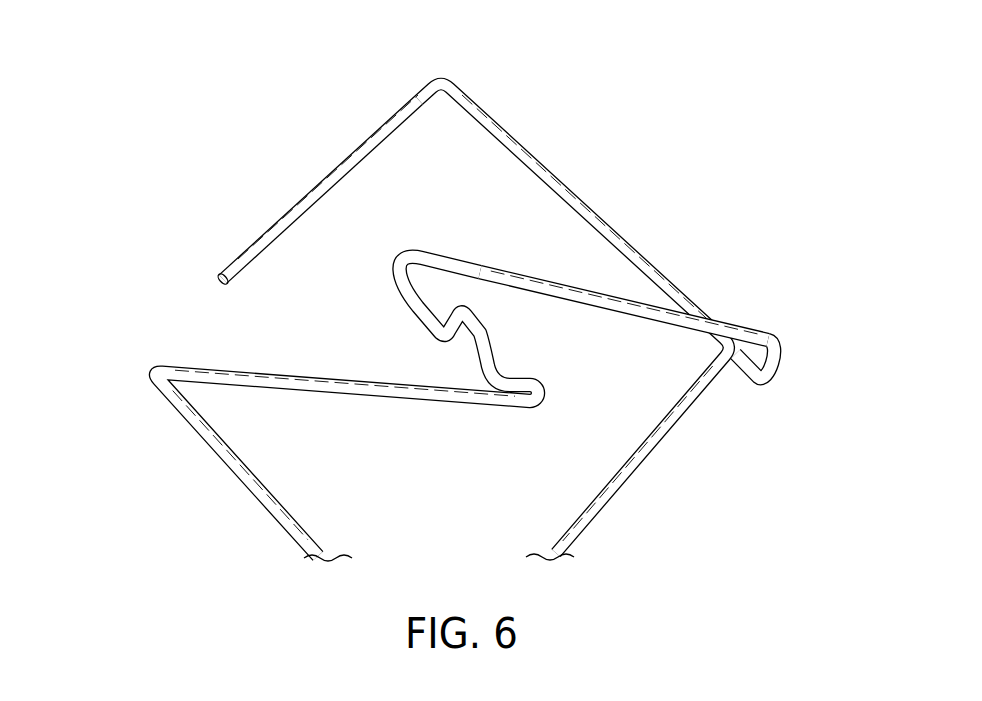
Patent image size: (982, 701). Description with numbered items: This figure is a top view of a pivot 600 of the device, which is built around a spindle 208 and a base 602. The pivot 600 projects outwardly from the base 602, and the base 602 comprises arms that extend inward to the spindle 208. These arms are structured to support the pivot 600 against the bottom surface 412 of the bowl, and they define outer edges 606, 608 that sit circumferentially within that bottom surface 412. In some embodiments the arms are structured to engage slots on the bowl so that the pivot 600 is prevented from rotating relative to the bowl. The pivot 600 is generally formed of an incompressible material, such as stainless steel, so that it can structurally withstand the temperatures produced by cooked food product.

The pivot 600 is at (462, 283).
The base 602 is at (322, 181).
The outer edge 606 is at (143, 377).
The outer edge 608 is at (784, 356).
The spindle 208 is at (467, 321).
The bottom surface 412 is at (285, 324).